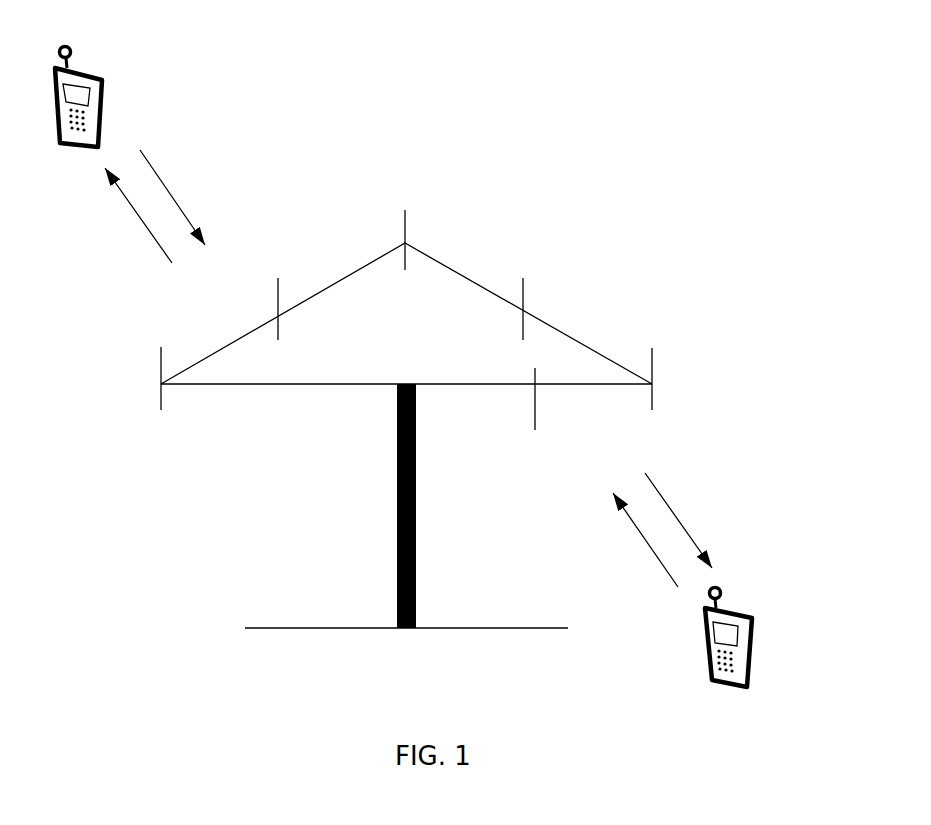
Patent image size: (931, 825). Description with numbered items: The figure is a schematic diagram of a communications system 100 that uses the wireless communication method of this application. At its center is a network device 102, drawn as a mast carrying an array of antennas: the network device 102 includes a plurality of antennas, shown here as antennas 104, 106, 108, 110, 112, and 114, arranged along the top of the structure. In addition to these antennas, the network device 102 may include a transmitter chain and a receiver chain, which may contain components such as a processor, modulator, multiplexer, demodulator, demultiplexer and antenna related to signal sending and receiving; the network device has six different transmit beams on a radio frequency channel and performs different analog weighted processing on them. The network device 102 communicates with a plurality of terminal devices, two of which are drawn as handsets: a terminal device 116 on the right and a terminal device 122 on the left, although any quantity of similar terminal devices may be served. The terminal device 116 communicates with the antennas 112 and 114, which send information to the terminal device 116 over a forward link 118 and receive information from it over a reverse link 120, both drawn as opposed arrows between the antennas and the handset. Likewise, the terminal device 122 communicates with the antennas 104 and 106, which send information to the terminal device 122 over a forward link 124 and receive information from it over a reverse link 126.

The communications system 100 is at (580, 73).
The network device 102 is at (416, 533).
The antenna 104 is at (162, 397).
The antenna 106 is at (278, 323).
The antenna 108 is at (406, 230).
The antenna 110 is at (523, 297).
The antenna 112 is at (652, 365).
The antenna 114 is at (535, 407).
The terminal device 116 is at (754, 611).
The forward link 118 is at (667, 497).
The reverse link 120 is at (660, 562).
The terminal device 122 is at (103, 78).
The forward link 124 is at (150, 233).
The reverse link 126 is at (158, 175).